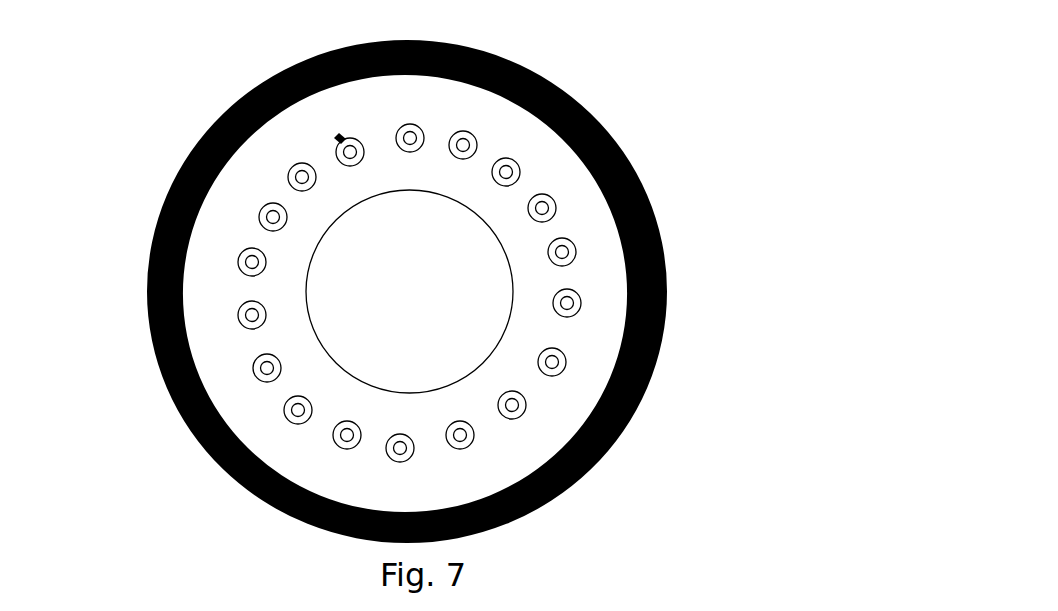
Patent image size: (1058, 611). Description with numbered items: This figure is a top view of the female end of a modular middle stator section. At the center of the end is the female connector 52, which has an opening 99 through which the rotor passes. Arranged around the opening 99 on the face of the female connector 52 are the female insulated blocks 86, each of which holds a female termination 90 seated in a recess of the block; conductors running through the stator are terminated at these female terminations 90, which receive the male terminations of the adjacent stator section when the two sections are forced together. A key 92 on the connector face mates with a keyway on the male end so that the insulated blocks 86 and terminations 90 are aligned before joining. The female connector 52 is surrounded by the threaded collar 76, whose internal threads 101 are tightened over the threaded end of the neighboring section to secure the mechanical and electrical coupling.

The female connector 52 is at (575, 408).
The threaded collar 76 is at (158, 372).
The female insulated block 86 is at (520, 165).
The female termination 90 is at (507, 170).
The key 92 is at (338, 140).
The opening 99 is at (513, 292).
The internal threads 101 is at (207, 228).